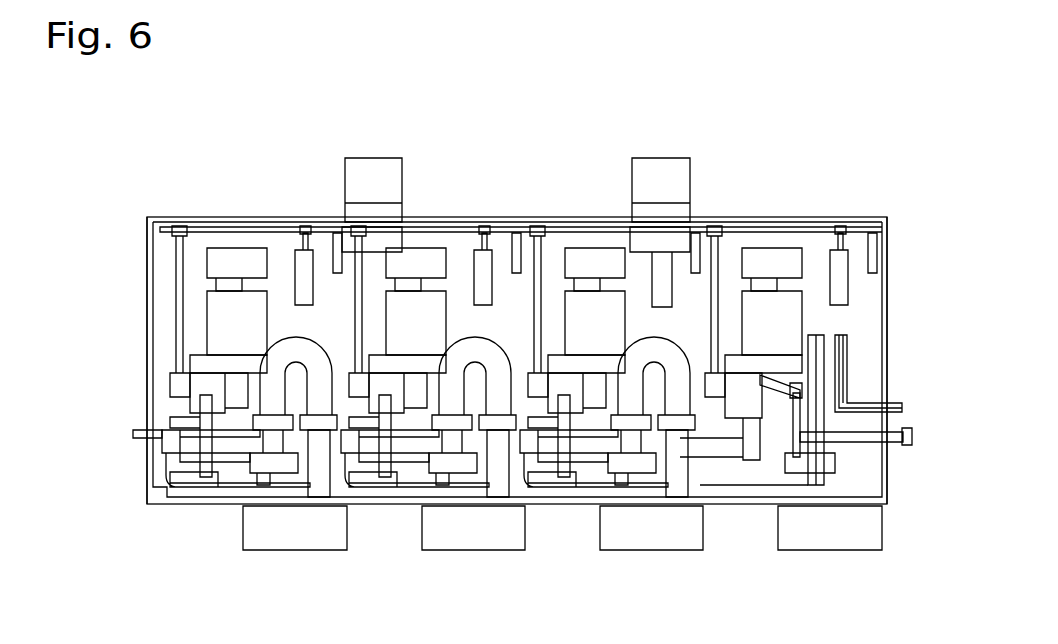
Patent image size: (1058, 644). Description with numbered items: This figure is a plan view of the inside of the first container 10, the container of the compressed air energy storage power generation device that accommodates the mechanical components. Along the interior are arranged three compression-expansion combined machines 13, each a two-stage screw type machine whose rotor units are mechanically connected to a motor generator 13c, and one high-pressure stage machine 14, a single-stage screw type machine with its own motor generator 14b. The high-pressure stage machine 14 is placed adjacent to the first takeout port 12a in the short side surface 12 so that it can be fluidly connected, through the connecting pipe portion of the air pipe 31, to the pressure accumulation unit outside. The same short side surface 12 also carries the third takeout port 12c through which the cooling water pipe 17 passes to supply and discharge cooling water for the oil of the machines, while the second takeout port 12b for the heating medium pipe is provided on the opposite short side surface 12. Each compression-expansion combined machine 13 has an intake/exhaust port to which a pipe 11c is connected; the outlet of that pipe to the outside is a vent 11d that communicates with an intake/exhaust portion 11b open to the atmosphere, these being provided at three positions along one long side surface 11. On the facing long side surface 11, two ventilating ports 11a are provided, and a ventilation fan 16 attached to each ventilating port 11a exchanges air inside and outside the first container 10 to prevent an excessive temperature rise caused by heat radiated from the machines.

The first container 10 is at (849, 202).
The long side surface 11 is at (518, 217).
The ventilating port 11a is at (373, 158).
The intake/exhaust portion 11b is at (300, 550).
The pipe 11c is at (347, 518).
The vent 11d is at (327, 473).
The short side surface 12 is at (522, 381).
The first takeout port 12a is at (888, 443).
The second takeout port 12b is at (135, 442).
The third takeout port 12c is at (888, 405).
The compression-expansion combined machine 13 is at (407, 246).
The motor generator 13c is at (252, 312).
The high-pressure stage machine 14 is at (791, 299).
The motor generator 14b is at (787, 302).
The ventilation fan 16 is at (345, 230).
The cooling water pipe 17 is at (853, 405).
The air pipe 31 is at (853, 445).